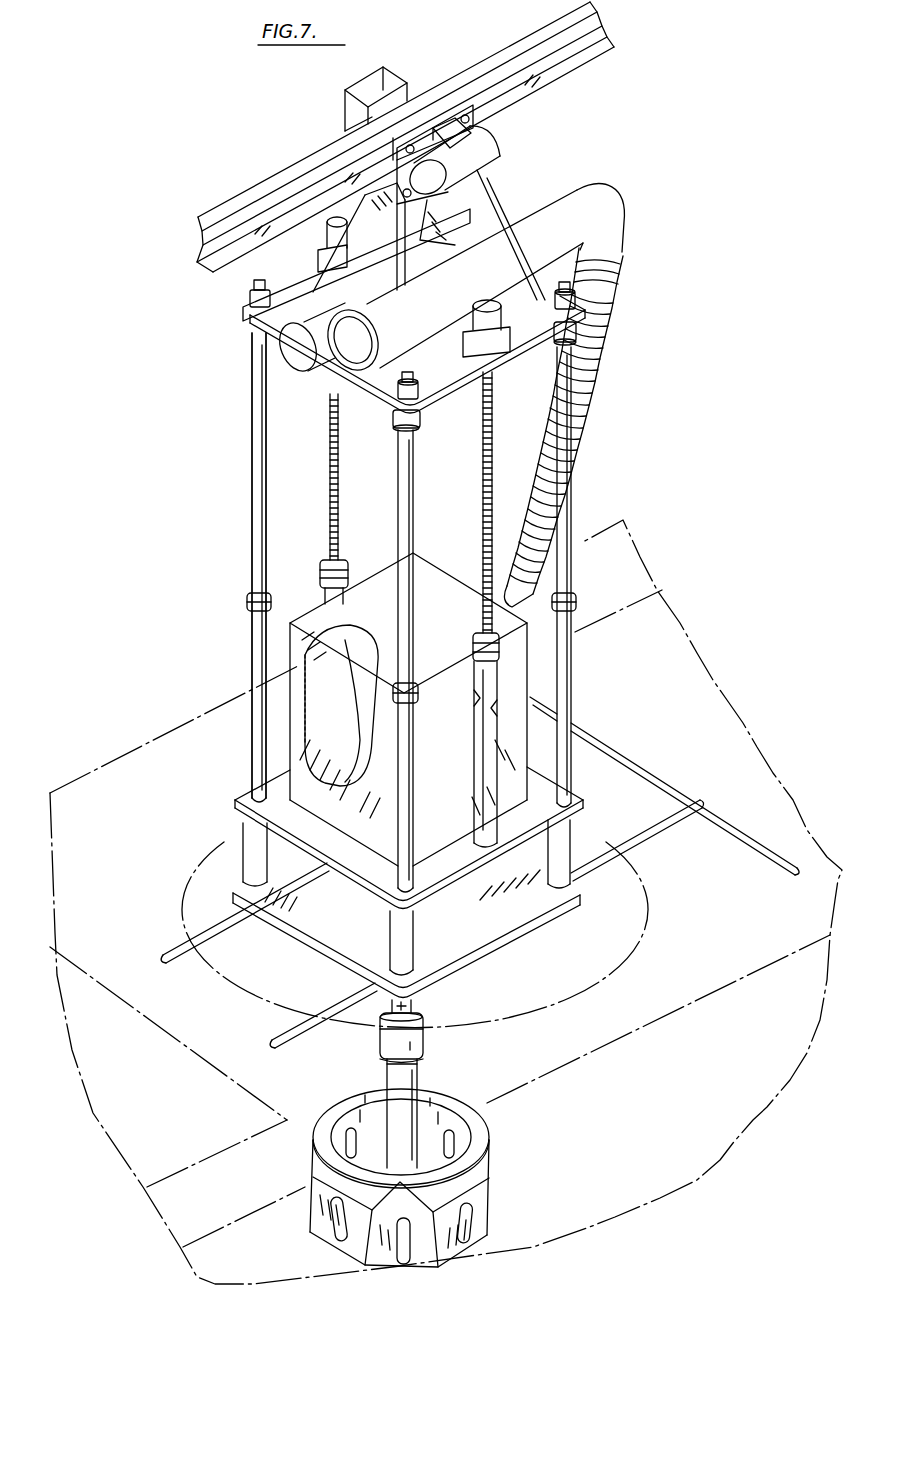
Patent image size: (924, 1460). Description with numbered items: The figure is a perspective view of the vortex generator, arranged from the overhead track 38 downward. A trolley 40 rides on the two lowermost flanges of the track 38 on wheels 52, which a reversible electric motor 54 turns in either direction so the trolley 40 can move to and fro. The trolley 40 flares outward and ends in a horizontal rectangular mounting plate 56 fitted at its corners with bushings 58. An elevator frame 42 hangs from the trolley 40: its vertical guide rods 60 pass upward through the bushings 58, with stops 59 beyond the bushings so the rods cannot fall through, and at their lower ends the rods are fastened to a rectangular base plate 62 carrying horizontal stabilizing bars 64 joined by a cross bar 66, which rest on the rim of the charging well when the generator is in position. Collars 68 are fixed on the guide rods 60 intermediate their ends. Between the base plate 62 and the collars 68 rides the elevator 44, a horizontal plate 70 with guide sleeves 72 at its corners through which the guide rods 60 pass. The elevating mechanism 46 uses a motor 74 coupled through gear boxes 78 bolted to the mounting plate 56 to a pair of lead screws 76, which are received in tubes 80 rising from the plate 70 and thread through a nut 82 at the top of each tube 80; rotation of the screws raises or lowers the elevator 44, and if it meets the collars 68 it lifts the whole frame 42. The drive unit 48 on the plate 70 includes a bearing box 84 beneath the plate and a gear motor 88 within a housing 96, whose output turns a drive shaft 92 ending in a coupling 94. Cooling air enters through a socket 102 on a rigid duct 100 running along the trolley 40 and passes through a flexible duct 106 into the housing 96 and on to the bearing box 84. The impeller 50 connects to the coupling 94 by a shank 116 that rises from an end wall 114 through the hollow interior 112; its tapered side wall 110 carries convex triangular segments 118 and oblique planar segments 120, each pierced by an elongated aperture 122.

The track 38 is at (300, 180).
The trolley 40 is at (243, 318).
The elevator frame 42 is at (246, 484).
The elevator 44 is at (582, 787).
The elevating mechanism 46 is at (432, 262).
The drive unit 48 is at (340, 892).
The impeller 50 is at (393, 1188).
The wheels 52 is at (413, 110).
The reversible electric motor 54 is at (495, 138).
The mounting plate 56 is at (590, 333).
The bushings 58 is at (395, 428).
The stops 59 is at (420, 395).
The vertical guide rods 60 is at (413, 514).
The base plate 62 is at (525, 918).
The stabilizing bars 64 is at (265, 1028).
The cross bar 66 is at (752, 840).
The collars 68 is at (247, 603).
The horizontal plate 70 is at (240, 812).
The guide sleeves 72 is at (243, 860).
The motor 74 is at (288, 357).
The lead screws 76 is at (328, 484).
The gear boxes 78 is at (322, 240).
The tubes 80 is at (320, 580).
The nut 82 is at (348, 562).
The bearing box 84 is at (460, 903).
The gear motor 88 is at (350, 750).
The drive shaft 92 is at (412, 1006).
The coupling 94 is at (380, 1034).
The housing 96 is at (292, 683).
The rigid duct 100 is at (552, 198).
The socket 102 is at (350, 352).
The flexible duct 106 is at (578, 447).
The side wall 110 is at (485, 1150).
The hollow interior 112 is at (443, 1117).
The end wall 114 is at (380, 1165).
The shank 116 is at (417, 1067).
The triangular segments 118 is at (433, 1193).
The planar segments 120 is at (357, 1250).
The aperture 122 is at (408, 1263).